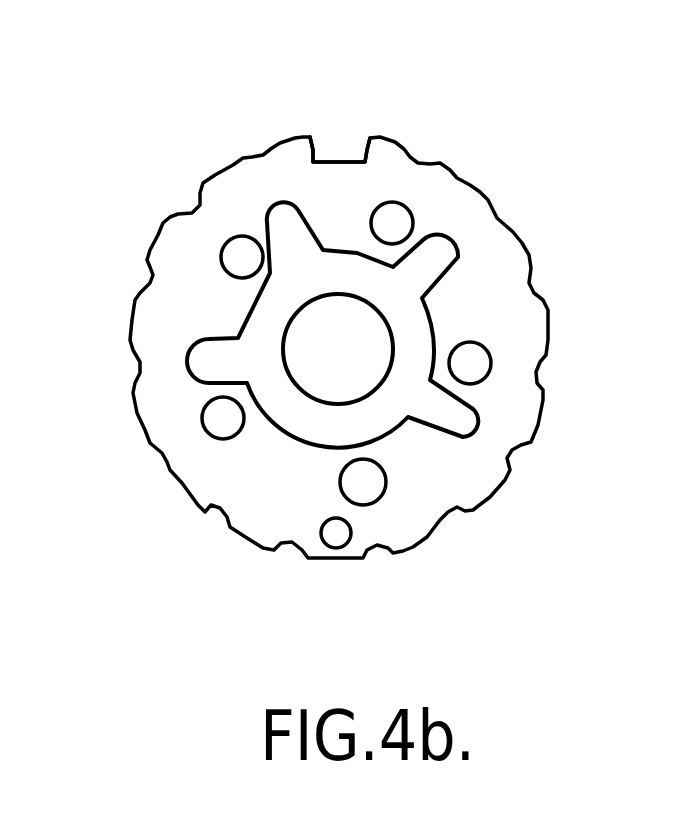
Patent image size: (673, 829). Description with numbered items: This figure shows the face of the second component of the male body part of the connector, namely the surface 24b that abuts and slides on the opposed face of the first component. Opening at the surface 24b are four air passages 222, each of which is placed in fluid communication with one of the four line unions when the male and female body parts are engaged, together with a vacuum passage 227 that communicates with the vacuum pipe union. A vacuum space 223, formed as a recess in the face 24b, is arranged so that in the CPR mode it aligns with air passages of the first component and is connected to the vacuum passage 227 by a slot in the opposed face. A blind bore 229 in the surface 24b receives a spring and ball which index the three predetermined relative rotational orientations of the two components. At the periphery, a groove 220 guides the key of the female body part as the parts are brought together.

The surface of the second component 24b is at (468, 152).
The groove 220 is at (355, 148).
The air passage 222 is at (220, 262).
The vacuum space 223 is at (448, 257).
The vacuum passage 227 is at (385, 492).
The blind bore 229 is at (336, 549).